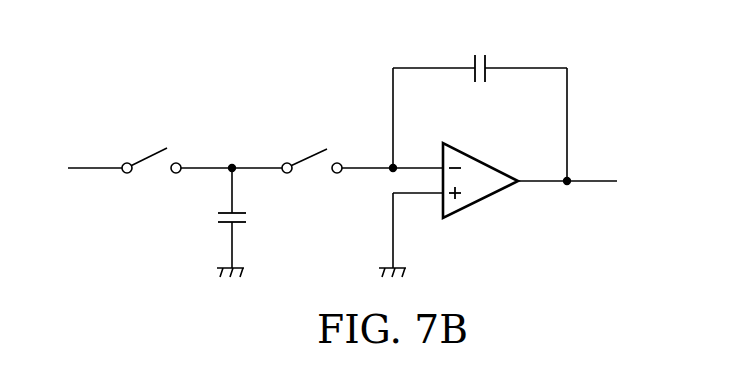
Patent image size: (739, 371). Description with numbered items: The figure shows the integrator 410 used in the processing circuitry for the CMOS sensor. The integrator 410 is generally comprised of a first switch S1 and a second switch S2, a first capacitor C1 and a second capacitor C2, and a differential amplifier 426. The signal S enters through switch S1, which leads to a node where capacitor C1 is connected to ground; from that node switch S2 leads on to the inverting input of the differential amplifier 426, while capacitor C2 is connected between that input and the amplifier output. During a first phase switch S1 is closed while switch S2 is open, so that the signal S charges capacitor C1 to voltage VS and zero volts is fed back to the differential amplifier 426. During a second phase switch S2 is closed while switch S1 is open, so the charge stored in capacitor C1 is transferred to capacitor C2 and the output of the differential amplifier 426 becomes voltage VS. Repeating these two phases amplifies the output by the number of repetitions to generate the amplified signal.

The integrator 410 is at (108, 79).
The differential amplifier 426 is at (481, 199).
The switch S1 is at (151, 145).
The switch S2 is at (312, 145).
The capacitor C1 is at (215, 218).
The capacitor C2 is at (480, 101).